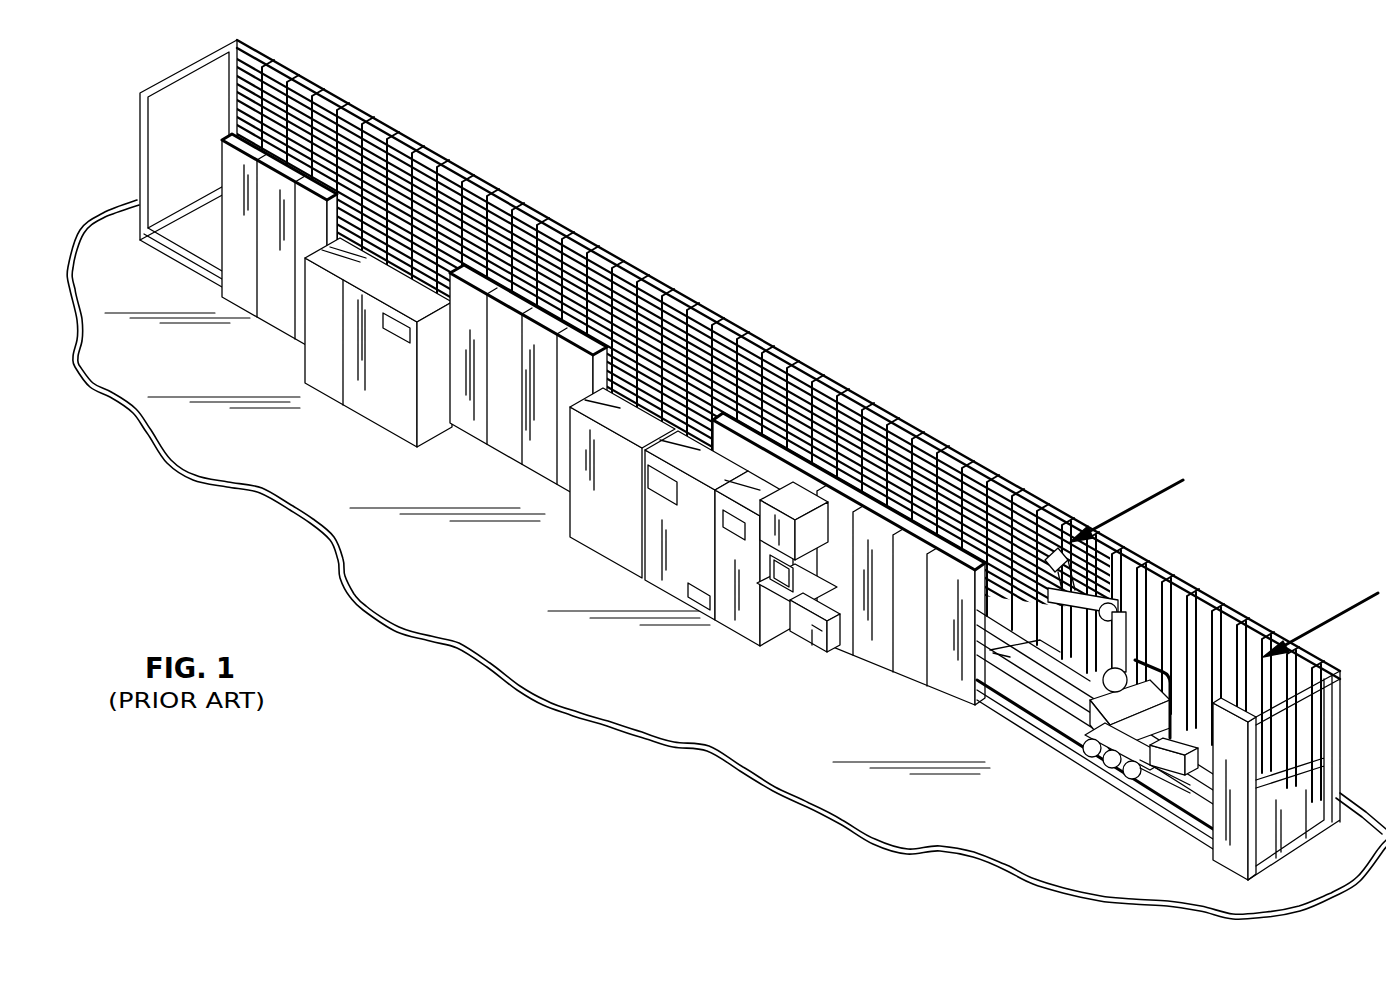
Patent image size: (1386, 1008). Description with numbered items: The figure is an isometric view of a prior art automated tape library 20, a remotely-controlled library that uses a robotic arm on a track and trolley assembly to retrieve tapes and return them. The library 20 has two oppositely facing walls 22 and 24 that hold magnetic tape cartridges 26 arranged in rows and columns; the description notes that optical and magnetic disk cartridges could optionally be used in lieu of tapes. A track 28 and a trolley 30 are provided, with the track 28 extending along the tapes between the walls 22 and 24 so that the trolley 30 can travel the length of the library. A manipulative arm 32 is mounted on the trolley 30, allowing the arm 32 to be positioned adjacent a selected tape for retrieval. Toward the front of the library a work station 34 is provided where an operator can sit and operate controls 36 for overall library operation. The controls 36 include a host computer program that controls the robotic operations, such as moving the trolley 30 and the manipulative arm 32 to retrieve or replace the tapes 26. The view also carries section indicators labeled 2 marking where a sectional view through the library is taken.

The section line 2- 2 is at (1183, 480).
The automated tape library 20 is at (726, 479).
The wall of magnetic tape cartridges 22 is at (740, 425).
The wall of magnetic tape cartridges 24 is at (500, 293).
The magnetic tape cartridges 26 is at (447, 187).
The track 28 is at (1053, 657).
The trolley 30 is at (1182, 773).
The manipulative arm 32 is at (1127, 587).
The work station 34 is at (800, 607).
The controls 36 is at (763, 597).